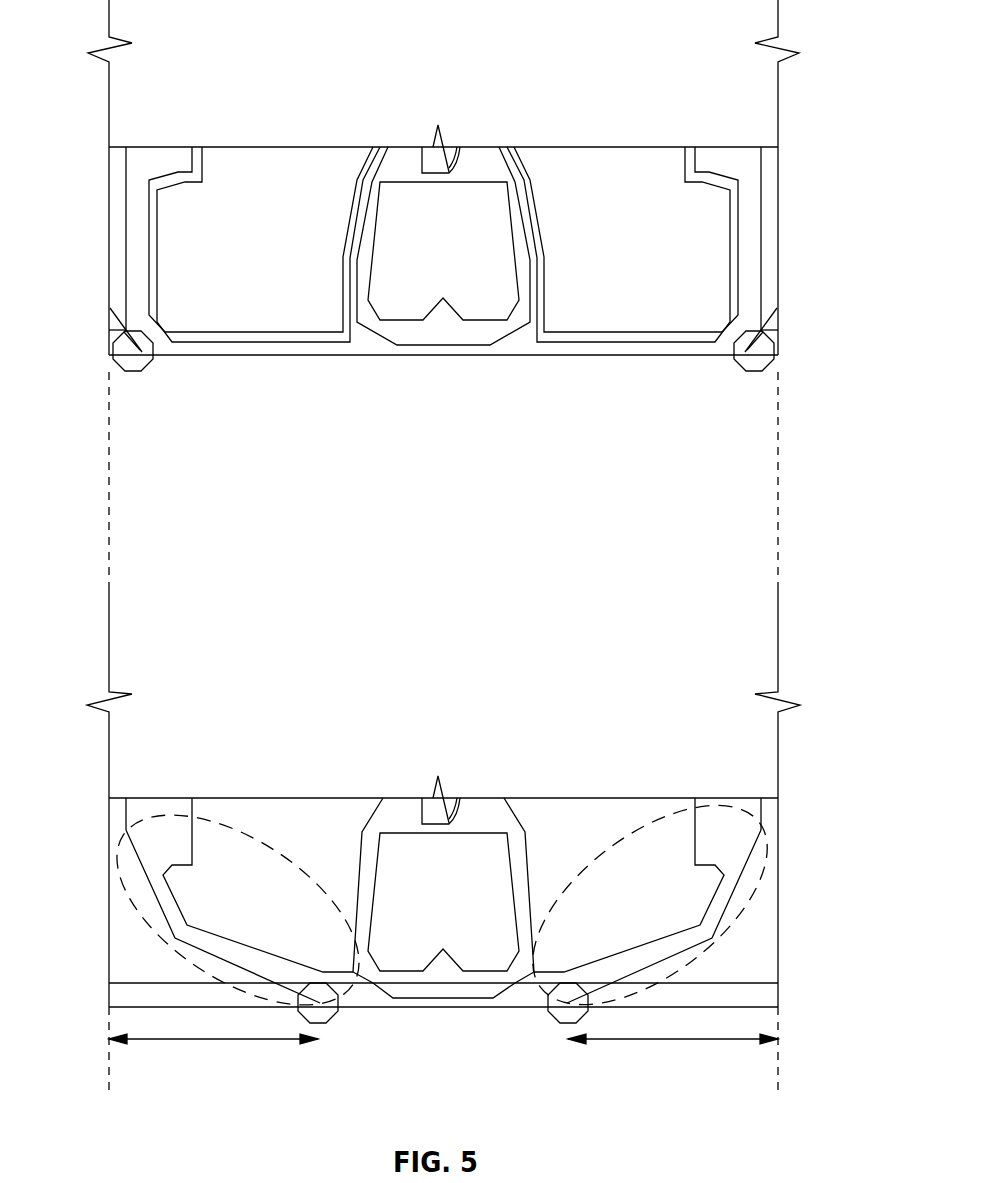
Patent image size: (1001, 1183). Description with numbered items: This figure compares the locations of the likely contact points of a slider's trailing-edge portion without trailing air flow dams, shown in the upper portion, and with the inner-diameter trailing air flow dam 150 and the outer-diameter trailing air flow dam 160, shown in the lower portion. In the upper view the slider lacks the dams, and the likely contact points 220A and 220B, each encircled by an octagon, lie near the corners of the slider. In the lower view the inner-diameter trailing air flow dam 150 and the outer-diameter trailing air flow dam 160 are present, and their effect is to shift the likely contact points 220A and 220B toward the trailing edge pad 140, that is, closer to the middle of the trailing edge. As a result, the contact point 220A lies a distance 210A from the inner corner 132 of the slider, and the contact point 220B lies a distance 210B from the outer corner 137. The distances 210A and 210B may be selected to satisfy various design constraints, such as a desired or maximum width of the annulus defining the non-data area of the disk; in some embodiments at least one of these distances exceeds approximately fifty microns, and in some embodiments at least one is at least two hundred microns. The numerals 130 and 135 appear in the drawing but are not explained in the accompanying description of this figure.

The first side panel 130 is at (205, 910).
The outer-diameter trailing air flow dam 160 is at (772, 872).
The inner-diameter trailing air flow dam 150 is at (155, 937).
The inner corner 132 is at (108, 1007).
The base plate 135 is at (782, 952).
The outer corner 137 is at (782, 1007).
The trailing edge pad 140 is at (420, 990).
The likely contact point 220A is at (117, 363).
The likely contact point 220B is at (766, 363).
The distance 210A is at (218, 1042).
The distance 210B is at (688, 1042).